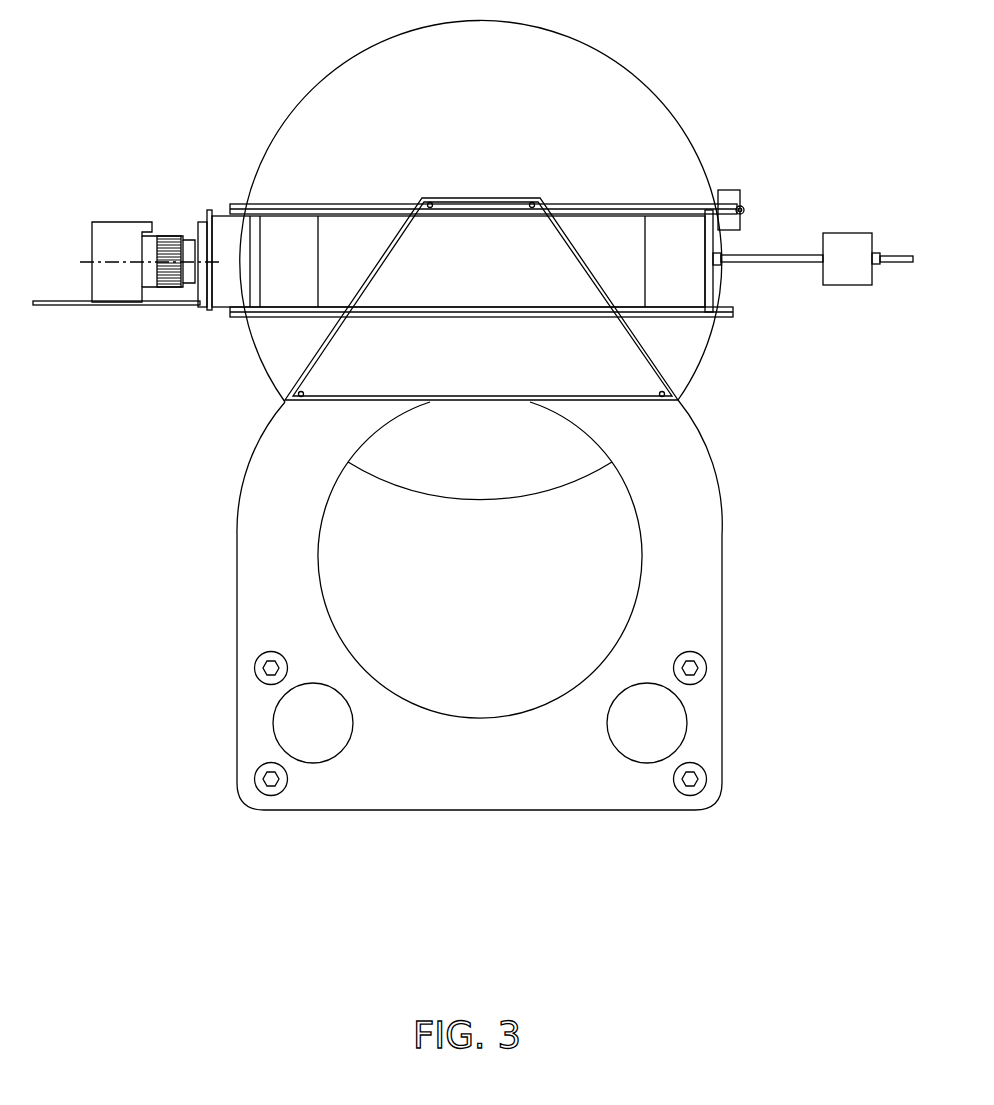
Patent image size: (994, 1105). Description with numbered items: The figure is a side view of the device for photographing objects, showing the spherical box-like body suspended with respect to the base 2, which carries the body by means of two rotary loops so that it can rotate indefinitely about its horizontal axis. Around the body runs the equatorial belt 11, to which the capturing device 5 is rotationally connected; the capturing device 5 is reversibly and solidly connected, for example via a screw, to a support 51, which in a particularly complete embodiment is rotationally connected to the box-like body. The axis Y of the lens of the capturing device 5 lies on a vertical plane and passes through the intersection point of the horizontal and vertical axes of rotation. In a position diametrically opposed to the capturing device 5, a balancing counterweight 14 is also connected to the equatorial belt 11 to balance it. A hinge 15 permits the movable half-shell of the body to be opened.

The base 2 is at (700, 560).
The capturing device 5 is at (117, 233).
The equatorial belt 11 is at (300, 253).
The balancing counterweight 14 is at (848, 265).
The hinge 15 is at (741, 206).
The support 51 is at (125, 303).
The axis of the lens Y is at (82, 262).